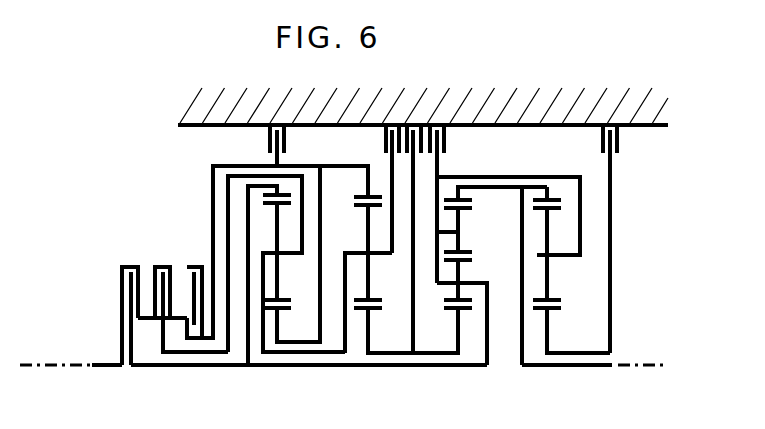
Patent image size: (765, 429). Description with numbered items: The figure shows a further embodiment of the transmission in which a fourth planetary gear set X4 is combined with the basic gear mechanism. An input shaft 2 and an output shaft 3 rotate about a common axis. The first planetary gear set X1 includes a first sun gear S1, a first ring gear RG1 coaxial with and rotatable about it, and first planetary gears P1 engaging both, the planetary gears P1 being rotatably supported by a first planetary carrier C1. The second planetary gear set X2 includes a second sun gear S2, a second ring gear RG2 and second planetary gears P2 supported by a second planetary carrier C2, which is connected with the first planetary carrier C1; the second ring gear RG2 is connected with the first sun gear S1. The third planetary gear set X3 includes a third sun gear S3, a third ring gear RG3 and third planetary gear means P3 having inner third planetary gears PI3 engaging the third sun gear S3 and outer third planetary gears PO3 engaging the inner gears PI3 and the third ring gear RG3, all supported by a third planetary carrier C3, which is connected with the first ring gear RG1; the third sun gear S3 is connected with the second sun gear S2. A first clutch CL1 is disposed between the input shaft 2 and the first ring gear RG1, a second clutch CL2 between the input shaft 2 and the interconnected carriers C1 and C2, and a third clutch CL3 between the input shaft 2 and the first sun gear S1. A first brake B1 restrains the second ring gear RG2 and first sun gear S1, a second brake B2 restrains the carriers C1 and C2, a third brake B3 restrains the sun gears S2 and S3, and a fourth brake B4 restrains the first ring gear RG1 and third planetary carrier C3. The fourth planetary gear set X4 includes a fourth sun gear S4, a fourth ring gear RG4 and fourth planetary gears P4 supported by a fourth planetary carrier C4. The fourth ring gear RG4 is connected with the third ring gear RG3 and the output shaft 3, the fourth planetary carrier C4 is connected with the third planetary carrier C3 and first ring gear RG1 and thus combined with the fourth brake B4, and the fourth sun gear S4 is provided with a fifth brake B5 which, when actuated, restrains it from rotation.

The input shaft 2 is at (112, 367).
The output shaft 3 is at (627, 367).
The first clutch CL1 is at (122, 264).
The second clutch CL2 is at (158, 265).
The third clutch CL3 is at (202, 265).
The first brake B1 is at (286, 134).
The second brake B2 is at (383, 128).
The third brake B3 is at (407, 128).
The fourth brake B4 is at (447, 138).
The fifth brake B5 is at (620, 137).
The first ring gear RG1 is at (278, 186).
The second ring gear RG2 is at (370, 185).
The third ring gear RG3 is at (458, 192).
The fourth ring gear RG4 is at (552, 192).
The first planetary carrier C1 is at (274, 253).
The second planetary carrier C2 is at (360, 253).
The third planetary carrier C3 is at (486, 284).
The fourth planetary carrier C4 is at (548, 236).
The first planetary gears P1 is at (279, 286).
The second planetary gears P2 is at (369, 286).
The third planetary gear means P3 is at (466, 239).
The fourth planetary gears P4 is at (549, 290).
The outer third planetary gears PO3 is at (460, 222).
The inner third planetary gears PI3 is at (460, 270).
The first sun gear S1 is at (279, 324).
The second sun gear S2 is at (369, 324).
The third sun gear S3 is at (458, 320).
The fourth sun gear S4 is at (549, 324).
The first planetary gear set X1 is at (268, 333).
The second planetary gear set X2 is at (360, 333).
The third planetary gear set X3 is at (465, 338).
The fourth planetary gear set X4 is at (540, 342).